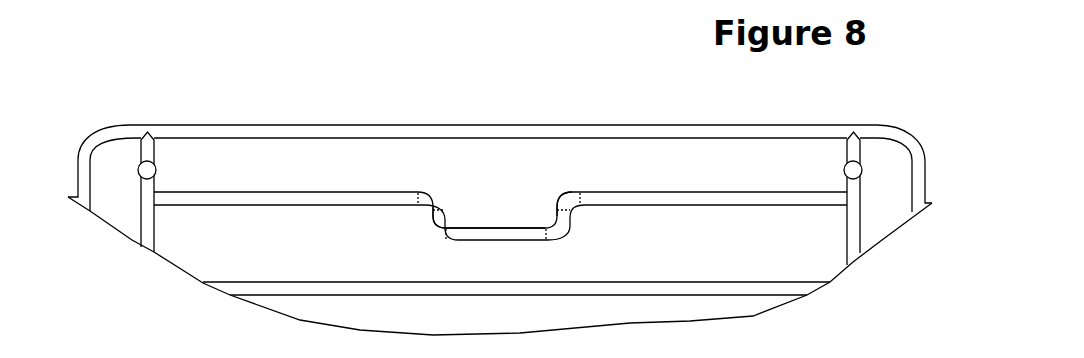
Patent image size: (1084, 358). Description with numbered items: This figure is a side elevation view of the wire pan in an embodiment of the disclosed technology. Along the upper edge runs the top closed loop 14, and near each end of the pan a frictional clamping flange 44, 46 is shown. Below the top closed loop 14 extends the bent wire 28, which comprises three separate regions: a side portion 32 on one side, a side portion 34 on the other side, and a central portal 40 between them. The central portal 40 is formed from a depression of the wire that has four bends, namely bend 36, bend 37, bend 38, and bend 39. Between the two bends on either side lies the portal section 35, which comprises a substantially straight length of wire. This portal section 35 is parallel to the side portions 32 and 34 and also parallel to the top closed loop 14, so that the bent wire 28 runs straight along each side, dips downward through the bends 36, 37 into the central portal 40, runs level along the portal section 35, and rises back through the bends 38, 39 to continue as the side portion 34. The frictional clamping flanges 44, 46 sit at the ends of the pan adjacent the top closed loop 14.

The top closed loop 14 is at (686, 126).
The bent wire 28 is at (737, 191).
The side portion 32 is at (255, 192).
The side portion 34 is at (712, 191).
The portal section 35 is at (502, 228).
The bend 36 is at (431, 193).
The bend 37 is at (448, 228).
The bend 38 is at (557, 216).
The bend 39 is at (581, 194).
The central portal 40 is at (533, 228).
The frictional clamping flange 44 is at (152, 162).
The frictional clamping flange 46 is at (859, 163).